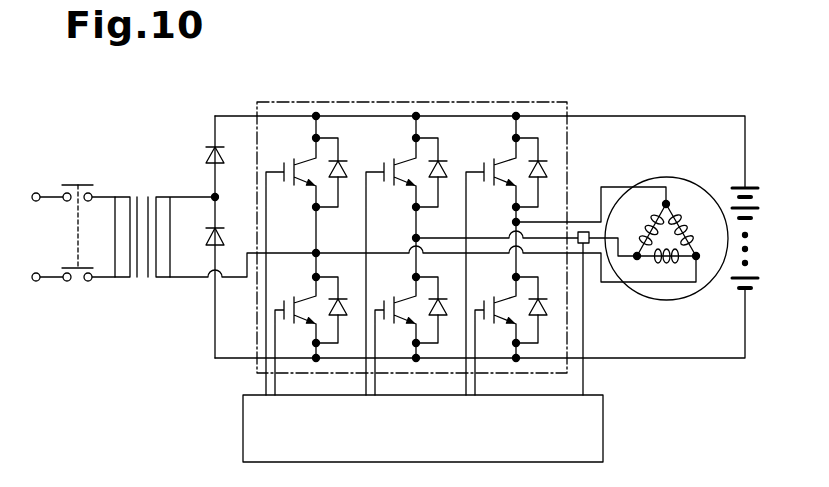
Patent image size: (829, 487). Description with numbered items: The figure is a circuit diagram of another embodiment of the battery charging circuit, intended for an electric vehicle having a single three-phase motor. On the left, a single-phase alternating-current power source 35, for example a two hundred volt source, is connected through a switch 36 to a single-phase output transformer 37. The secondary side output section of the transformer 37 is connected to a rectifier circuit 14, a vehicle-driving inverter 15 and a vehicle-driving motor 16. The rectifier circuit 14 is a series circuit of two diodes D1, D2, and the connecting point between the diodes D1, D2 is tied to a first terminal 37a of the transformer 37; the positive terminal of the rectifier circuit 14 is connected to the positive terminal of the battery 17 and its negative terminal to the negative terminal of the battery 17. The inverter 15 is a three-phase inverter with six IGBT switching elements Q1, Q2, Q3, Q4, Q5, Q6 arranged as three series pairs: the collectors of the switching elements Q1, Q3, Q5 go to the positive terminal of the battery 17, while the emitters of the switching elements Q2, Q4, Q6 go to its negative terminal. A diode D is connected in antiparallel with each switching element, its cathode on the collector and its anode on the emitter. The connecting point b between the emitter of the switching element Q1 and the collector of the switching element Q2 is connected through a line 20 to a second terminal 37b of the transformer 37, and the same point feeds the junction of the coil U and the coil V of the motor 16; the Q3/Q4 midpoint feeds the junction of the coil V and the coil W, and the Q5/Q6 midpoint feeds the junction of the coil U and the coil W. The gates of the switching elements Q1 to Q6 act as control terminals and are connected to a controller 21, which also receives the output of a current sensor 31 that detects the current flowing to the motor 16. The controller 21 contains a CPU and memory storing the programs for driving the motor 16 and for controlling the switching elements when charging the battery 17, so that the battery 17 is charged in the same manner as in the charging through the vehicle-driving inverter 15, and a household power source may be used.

The rectifier circuit 14 is at (214, 117).
The vehicle-driving inverter 15 is at (488, 102).
The vehicle-driving motor 16 is at (666, 222).
The battery 17 is at (752, 186).
The line 20 is at (233, 279).
The controller 21 is at (604, 427).
The current sensor 31 is at (583, 232).
The single-phase alternating-current power source 35 is at (37, 286).
The switch 36 is at (83, 185).
The single-phase output transformer 37 is at (165, 249).
The first terminal 37a is at (178, 196).
The second terminal 37b is at (178, 279).
The diode D1 is at (241, 140).
The diode D2 is at (241, 222).
The first switching element Q1 is at (303, 163).
The second switching element Q2 is at (303, 300).
The third switching element Q3 is at (403, 163).
The fourth switching element Q4 is at (403, 300).
The fifth switching element Q5 is at (503, 163).
The sixth switching element Q6 is at (503, 300).
The diode D is at (344, 180).
The connecting point b is at (314, 251).
The coil U is at (694, 228).
The coil V is at (664, 262).
The coil W is at (646, 228).